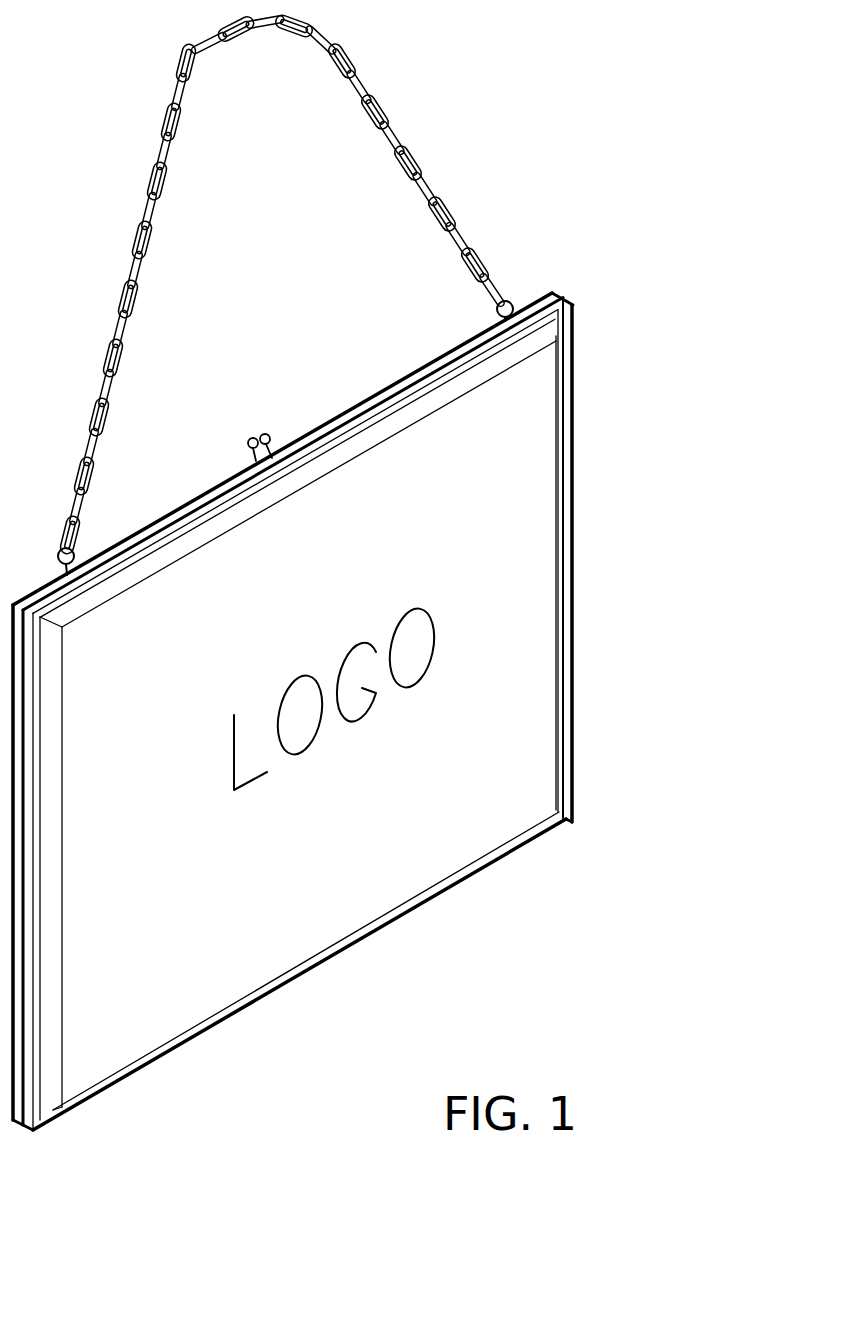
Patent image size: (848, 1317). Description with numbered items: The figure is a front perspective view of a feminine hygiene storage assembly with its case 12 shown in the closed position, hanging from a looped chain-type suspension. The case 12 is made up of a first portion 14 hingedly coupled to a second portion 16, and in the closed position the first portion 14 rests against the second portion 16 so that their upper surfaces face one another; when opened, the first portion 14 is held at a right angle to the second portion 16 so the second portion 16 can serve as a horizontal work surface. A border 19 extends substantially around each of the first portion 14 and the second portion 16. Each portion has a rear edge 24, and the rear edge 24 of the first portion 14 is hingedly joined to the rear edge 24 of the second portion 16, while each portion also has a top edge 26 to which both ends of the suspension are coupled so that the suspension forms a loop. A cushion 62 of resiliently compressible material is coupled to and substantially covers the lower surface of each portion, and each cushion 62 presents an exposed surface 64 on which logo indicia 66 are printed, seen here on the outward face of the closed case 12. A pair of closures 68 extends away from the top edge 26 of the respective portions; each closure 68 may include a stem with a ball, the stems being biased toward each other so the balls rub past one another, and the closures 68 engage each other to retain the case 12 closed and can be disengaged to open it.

The case 12 is at (575, 237).
The first portion 14 is at (525, 281).
The second portion 16 is at (528, 868).
The border 19 is at (37, 1063).
The rear edge 24 is at (468, 878).
The top edge 26 is at (345, 432).
The cushion 62 is at (207, 962).
The exposed surface 64 is at (530, 598).
The logo indicia 66 is at (441, 701).
The closure 68 is at (248, 447).